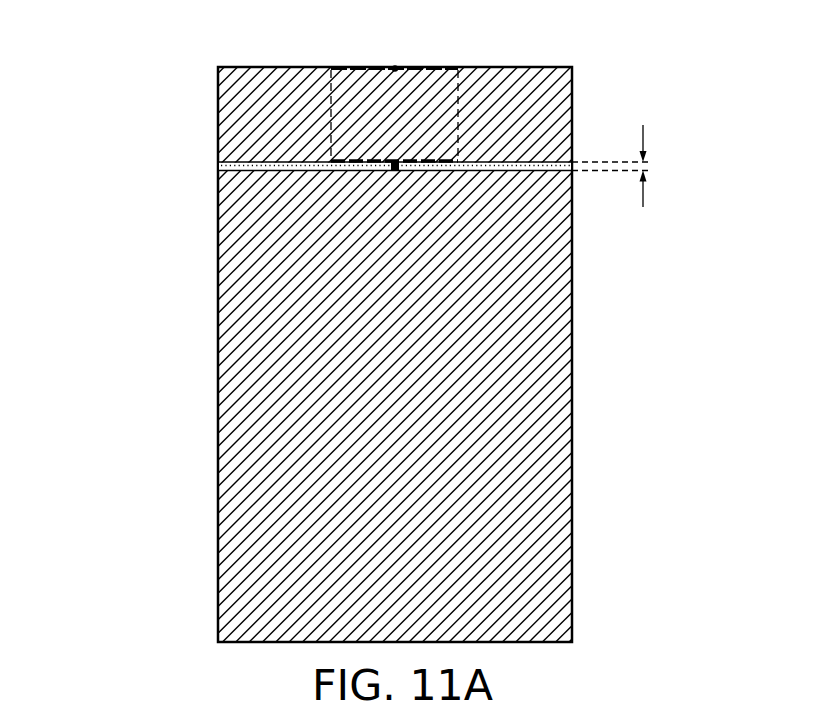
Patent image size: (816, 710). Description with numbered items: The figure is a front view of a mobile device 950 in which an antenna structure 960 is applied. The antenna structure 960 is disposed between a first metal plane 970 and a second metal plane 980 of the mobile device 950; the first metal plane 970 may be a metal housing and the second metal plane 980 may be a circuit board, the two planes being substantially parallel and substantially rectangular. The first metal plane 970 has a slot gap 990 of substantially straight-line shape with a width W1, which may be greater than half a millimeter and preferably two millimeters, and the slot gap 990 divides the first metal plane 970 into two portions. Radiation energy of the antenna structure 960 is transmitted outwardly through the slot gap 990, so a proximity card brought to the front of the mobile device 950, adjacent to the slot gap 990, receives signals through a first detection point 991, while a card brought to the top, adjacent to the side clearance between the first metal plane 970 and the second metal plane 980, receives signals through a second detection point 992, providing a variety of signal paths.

The mobile device 950 is at (132, 64).
The first metal plane 970 is at (227, 124).
The second metal plane 980 is at (219, 165).
The slot gap 990 is at (258, 171).
The antenna structure 960 is at (460, 115).
The first detection point 991 is at (395, 162).
The second detection point 992 is at (395, 68).
The width of the slot gap W1 is at (669, 166).